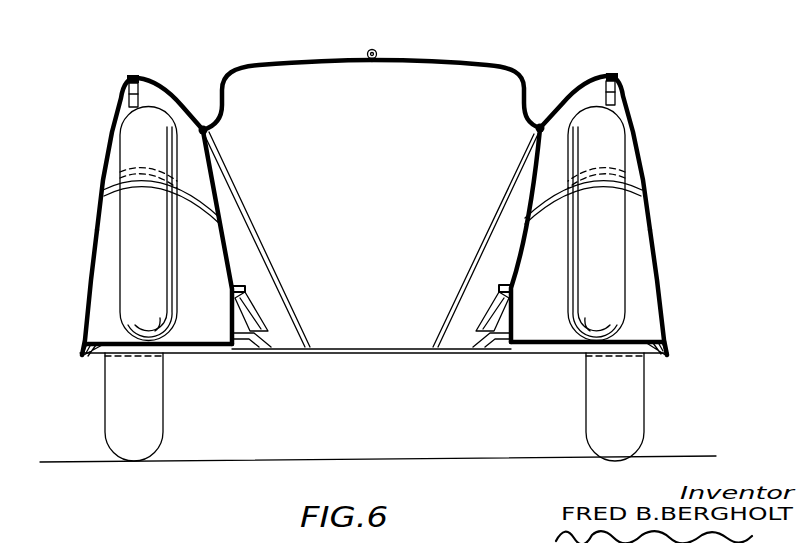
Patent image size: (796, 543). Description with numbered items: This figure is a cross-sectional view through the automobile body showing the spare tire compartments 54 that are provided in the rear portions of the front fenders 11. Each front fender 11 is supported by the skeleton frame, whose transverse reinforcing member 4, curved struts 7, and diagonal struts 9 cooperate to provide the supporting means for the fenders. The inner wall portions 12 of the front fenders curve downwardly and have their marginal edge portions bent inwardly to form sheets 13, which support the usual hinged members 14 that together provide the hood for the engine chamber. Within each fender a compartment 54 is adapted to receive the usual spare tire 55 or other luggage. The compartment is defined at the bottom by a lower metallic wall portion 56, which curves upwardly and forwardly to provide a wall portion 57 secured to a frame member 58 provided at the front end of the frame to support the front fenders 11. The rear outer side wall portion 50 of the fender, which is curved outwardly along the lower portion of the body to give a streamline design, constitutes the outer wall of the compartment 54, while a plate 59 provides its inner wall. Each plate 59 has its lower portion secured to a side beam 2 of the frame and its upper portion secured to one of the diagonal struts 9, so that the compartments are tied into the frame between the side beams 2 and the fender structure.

The side beam 2 is at (246, 289).
The transverse reinforcing member 4 is at (361, 348).
The curved strut 7 is at (129, 96).
The diagonal strut 9 is at (222, 152).
The front fender 11 is at (118, 81).
The inner wall portion 12 is at (168, 94).
The sheet 13 is at (207, 130).
The hinged member 14 is at (268, 63).
The rear outer side wall portion 50 is at (97, 245).
The spare tire compartment 54 is at (114, 303).
The spare tire 55 is at (142, 273).
The lower metallic wall portion 56 is at (215, 349).
The wall portion 57 is at (110, 204).
The frame member 58 is at (104, 188).
The plate 59 is at (226, 250).